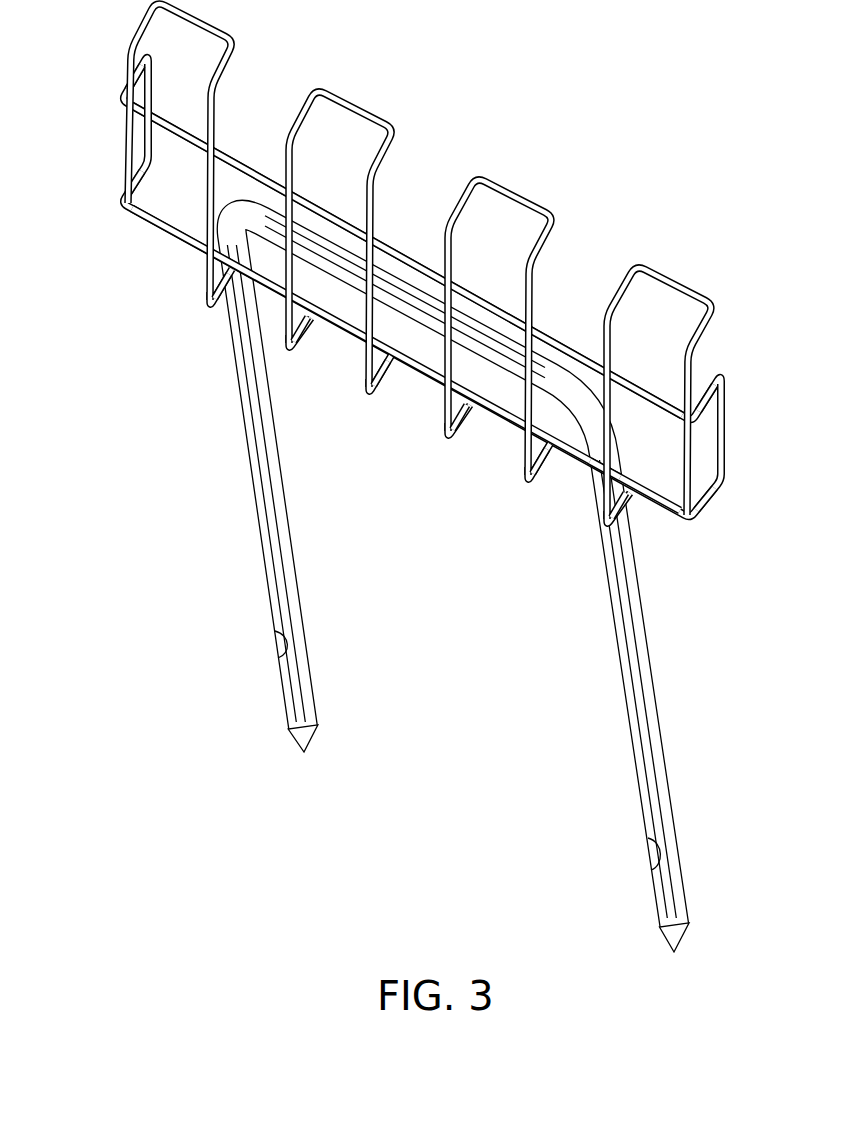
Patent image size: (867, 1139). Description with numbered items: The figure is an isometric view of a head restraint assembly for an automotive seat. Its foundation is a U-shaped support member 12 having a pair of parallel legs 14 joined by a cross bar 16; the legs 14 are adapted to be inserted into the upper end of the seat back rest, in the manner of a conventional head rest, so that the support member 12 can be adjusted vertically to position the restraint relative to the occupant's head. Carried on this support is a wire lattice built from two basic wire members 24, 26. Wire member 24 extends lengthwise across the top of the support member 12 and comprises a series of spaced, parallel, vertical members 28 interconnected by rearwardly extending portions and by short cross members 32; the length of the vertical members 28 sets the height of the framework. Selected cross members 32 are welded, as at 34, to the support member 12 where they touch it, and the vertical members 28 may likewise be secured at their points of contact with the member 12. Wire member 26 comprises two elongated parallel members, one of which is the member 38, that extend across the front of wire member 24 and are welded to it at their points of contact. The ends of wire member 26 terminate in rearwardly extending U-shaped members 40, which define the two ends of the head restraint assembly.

The U-shaped support member 12 is at (672, 706).
The parallel legs 14 is at (300, 622).
The cross bar 16 is at (503, 362).
The wire member 24 is at (208, 168).
The wire member 26 is at (418, 262).
The vertical members 28 is at (122, 152).
The short cross members 32 is at (530, 210).
The weld 34 is at (227, 300).
The elongated parallel member 38 is at (342, 327).
The U-shaped members 40 is at (150, 101).